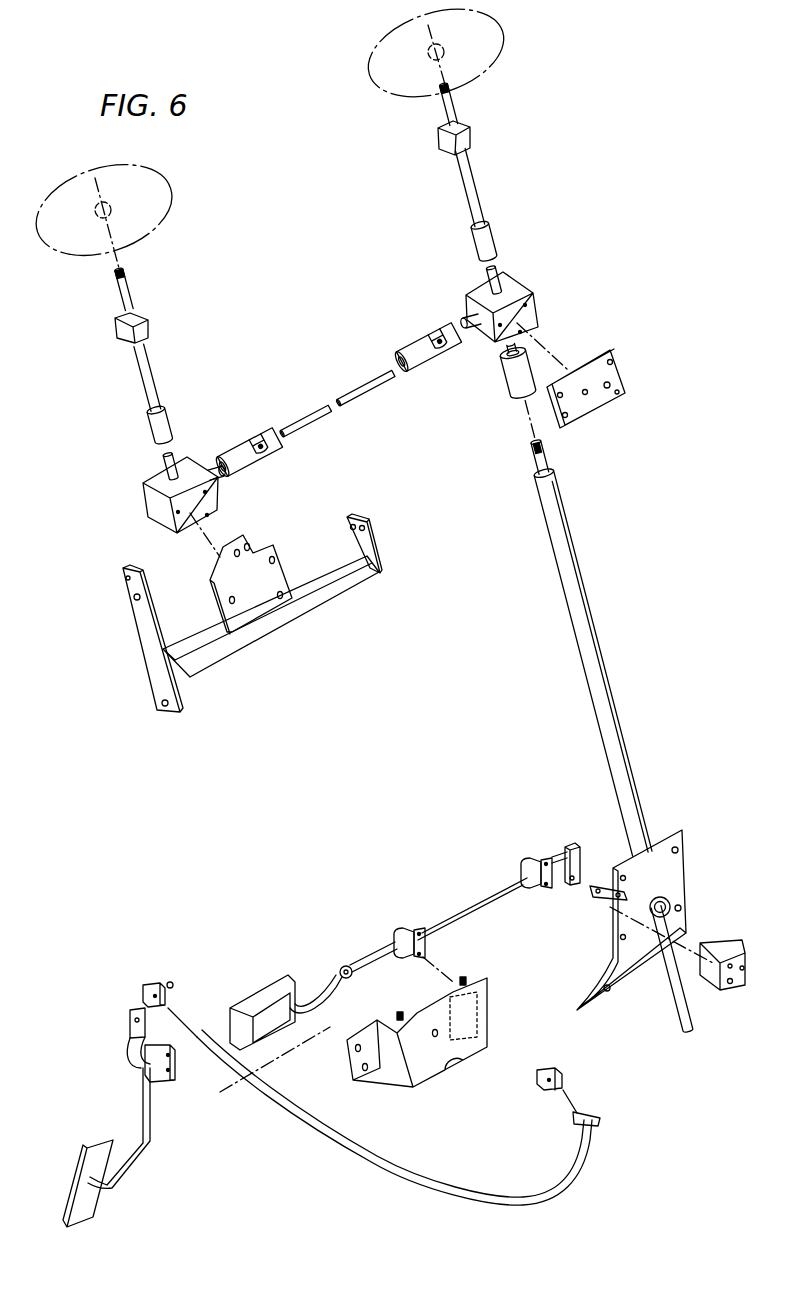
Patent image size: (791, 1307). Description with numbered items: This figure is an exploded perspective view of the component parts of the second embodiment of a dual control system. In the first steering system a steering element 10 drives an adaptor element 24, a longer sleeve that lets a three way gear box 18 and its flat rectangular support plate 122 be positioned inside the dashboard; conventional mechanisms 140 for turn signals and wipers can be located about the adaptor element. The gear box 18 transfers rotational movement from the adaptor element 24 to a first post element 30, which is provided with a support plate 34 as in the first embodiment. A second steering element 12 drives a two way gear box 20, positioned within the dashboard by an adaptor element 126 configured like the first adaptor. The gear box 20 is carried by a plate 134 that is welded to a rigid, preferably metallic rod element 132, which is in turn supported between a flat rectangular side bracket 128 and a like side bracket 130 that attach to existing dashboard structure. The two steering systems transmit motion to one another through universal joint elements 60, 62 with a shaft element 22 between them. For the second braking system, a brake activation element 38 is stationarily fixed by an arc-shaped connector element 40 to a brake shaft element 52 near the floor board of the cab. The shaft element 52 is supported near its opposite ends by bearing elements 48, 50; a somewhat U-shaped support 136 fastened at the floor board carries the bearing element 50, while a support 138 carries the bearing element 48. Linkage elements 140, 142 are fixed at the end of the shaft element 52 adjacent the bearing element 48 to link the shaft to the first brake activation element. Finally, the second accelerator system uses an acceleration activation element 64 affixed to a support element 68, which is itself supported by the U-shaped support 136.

The steering element 10 is at (498, 48).
The second steering element 12 is at (166, 202).
The three way gear box 18 is at (537, 311).
The two way gear box 20 is at (143, 500).
The shaft element 22 is at (380, 389).
The adaptor element 24 is at (475, 192).
The first post element 30 is at (598, 633).
The support plate 34 is at (685, 862).
The brake activation element 38 is at (267, 985).
The connector element 40 is at (330, 980).
The bearing element 48 is at (527, 862).
The bearing element 50 is at (402, 927).
The brake shaft element 52 is at (468, 908).
The universal joint element 60 is at (420, 343).
The universal joint element 62 is at (267, 435).
The acceleration activation element 64 is at (87, 1167).
The support element 68 is at (173, 1080).
The support plate 122 is at (620, 371).
The adaptor element 126 is at (153, 363).
The side bracket 128 is at (143, 653).
The side bracket 130 is at (377, 540).
The rod element 132 is at (310, 603).
The plate 134 is at (282, 553).
The U-shaped support 136 is at (438, 1077).
The support 138 is at (730, 985).
The linkage element 140 is at (475, 138).
The linkage element 142 is at (572, 845).